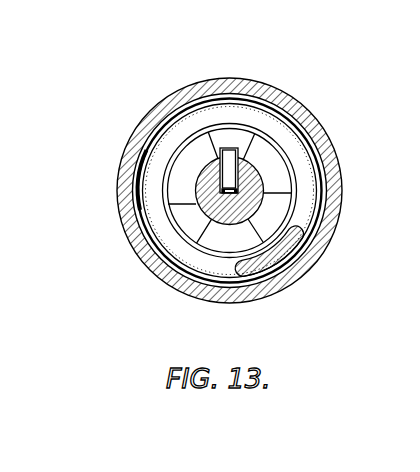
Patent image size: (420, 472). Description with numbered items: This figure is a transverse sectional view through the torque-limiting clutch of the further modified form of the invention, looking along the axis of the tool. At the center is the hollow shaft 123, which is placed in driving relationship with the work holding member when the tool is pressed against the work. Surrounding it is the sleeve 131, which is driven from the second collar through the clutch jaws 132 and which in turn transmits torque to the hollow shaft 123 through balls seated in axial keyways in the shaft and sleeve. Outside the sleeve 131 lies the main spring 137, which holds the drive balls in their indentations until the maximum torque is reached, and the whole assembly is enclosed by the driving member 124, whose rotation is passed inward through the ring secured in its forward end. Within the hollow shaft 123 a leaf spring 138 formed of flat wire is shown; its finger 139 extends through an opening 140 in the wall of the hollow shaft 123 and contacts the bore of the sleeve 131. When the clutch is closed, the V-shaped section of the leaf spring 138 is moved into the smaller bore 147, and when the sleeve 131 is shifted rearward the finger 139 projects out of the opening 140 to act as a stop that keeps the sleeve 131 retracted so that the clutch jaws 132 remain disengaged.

The hollow shaft 123 is at (210, 207).
The driving member 124 is at (300, 113).
The sleeve 131 is at (277, 178).
The clutch jaws 132 is at (232, 133).
The main spring 137 is at (313, 166).
The leaf spring 138 is at (236, 197).
The finger 139 is at (228, 168).
The opening 140 is at (242, 168).
The smaller bore 147 is at (230, 195).